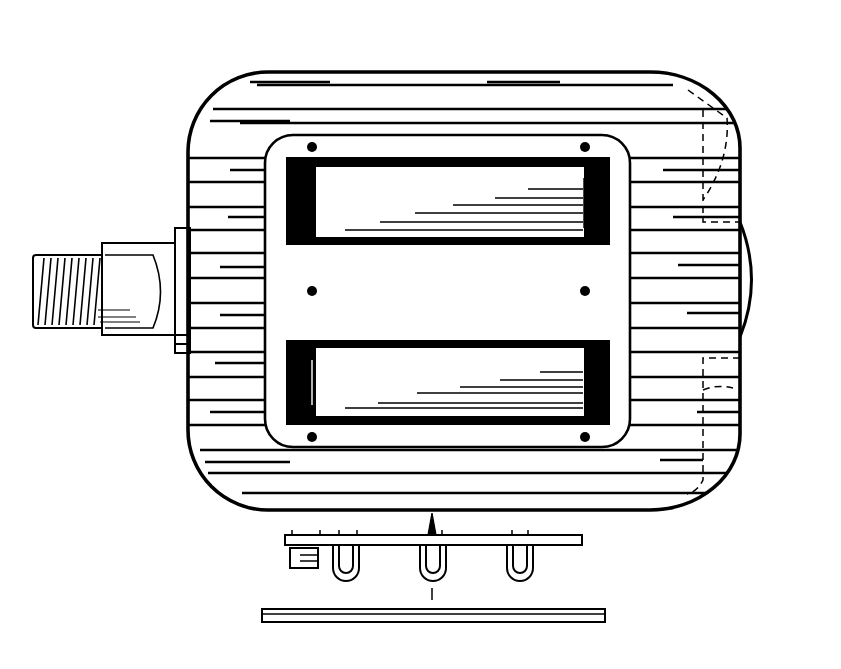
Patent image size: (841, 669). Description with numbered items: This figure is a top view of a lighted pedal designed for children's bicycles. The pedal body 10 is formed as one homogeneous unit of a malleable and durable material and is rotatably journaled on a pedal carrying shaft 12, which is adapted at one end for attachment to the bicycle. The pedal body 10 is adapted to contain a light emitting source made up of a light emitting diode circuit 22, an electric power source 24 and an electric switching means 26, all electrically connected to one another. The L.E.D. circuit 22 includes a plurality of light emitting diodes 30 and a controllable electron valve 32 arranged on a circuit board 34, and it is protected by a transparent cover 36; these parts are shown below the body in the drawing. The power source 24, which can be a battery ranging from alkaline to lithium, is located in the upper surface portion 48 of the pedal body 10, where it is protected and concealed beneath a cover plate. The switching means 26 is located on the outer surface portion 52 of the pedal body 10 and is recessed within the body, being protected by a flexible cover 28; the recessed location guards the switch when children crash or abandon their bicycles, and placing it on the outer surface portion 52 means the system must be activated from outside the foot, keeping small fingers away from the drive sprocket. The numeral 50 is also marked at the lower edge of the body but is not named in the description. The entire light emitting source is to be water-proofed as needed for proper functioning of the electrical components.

The pedal body 10 is at (245, 150).
The pedal carrying shaft 12 is at (142, 290).
The light emitting diode circuit 22 is at (552, 548).
The electric power source 24 is at (380, 184).
The electric switching means 26 is at (714, 156).
The flexible cover 28 is at (723, 104).
The light emitting diodes 30 is at (448, 580).
The controllable electron valve 32 is at (300, 572).
The circuit board 34 is at (410, 548).
The transparent cover 36 is at (290, 624).
The upper surface portion 48 is at (205, 393).
The pedal body 50 is at (600, 510).
The outer surface portion 52 is at (733, 390).